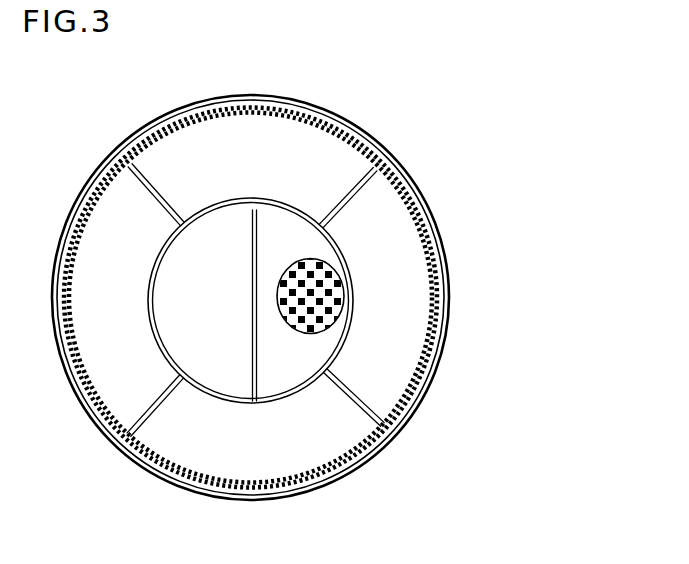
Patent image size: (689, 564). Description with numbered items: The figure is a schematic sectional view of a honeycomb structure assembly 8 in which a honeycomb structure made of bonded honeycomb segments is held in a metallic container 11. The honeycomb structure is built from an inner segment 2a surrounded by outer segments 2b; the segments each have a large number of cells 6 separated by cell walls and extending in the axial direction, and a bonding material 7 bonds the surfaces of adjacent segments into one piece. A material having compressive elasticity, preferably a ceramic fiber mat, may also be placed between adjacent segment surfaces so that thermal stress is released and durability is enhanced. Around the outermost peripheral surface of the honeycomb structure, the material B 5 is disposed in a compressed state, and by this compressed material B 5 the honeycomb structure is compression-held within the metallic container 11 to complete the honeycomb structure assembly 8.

The honeycomb structure assembly 8 is at (358, 113).
The metallic container 11 is at (402, 165).
The bonding material 7 is at (347, 202).
The material B 5 is at (437, 343).
The cell 6 is at (330, 323).
The inner segment 2a is at (273, 383).
The outer segment 2b is at (387, 400).